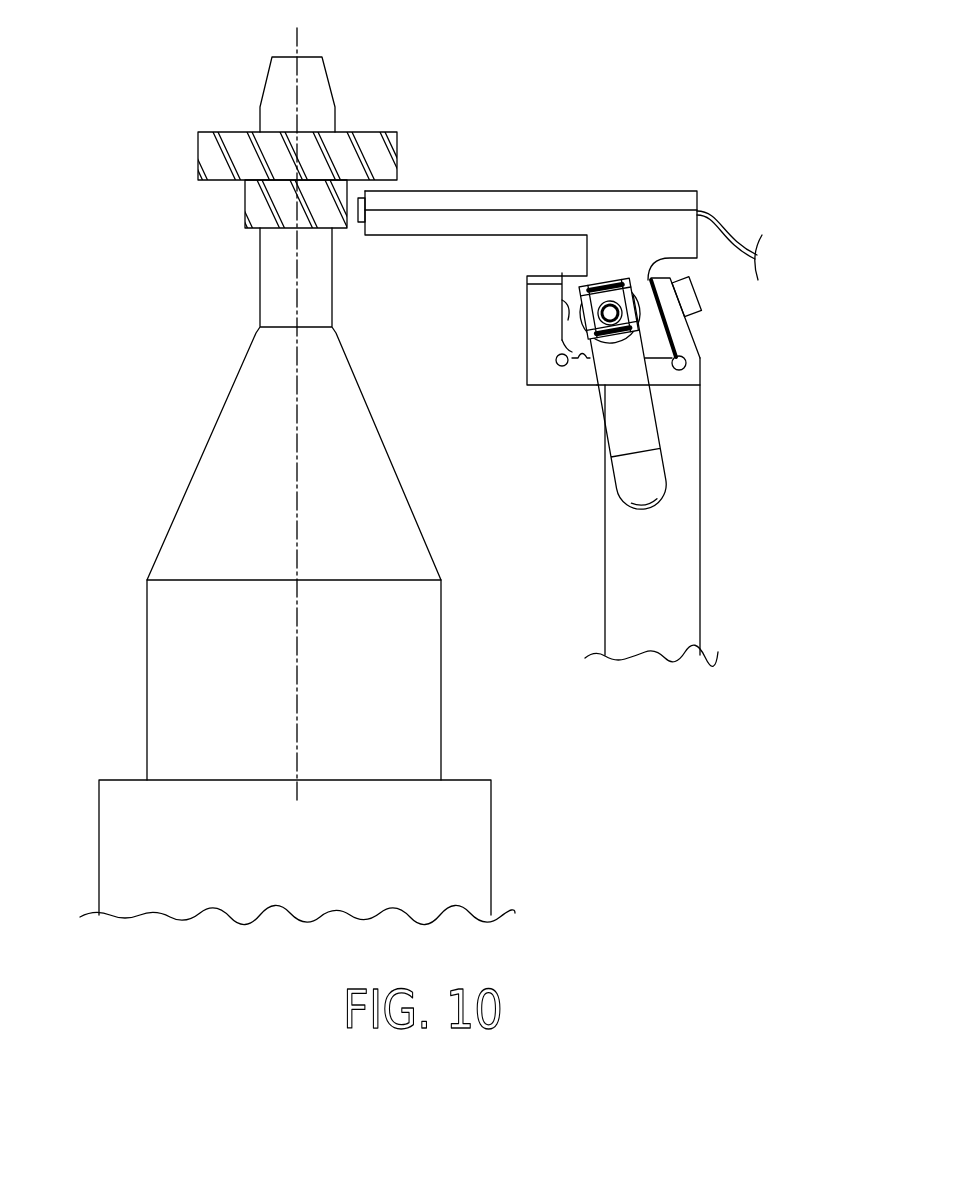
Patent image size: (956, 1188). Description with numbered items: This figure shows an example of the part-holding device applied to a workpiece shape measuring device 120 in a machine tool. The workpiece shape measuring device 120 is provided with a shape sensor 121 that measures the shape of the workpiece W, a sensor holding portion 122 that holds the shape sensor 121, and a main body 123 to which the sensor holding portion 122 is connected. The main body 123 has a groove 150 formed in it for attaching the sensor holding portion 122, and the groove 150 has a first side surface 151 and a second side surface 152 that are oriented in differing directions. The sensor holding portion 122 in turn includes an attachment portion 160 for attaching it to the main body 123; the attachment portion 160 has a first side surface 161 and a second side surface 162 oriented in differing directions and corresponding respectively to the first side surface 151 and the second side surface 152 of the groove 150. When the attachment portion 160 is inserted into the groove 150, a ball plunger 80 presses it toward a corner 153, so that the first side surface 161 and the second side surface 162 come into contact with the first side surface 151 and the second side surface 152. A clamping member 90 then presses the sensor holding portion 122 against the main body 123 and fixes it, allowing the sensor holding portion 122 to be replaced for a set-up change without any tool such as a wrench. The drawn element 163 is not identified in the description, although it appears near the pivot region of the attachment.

The workpiece W is at (196, 152).
The workpiece shape measuring device 120 is at (570, 369).
The shape sensor 121 is at (355, 212).
The sensor holding portion 122 is at (581, 190).
The main body 123 is at (700, 583).
The ball plunger 80 is at (703, 298).
The clamping member 90 is at (618, 395).
The groove 150 is at (570, 349).
The first side surface 151 is at (577, 358).
The second side surface 152 is at (528, 280).
The corner 153 is at (556, 352).
The attachment portion 160 is at (568, 312).
The first side surface 161 is at (585, 362).
The second side surface 162 is at (572, 333).
The spring 163 is at (557, 366).